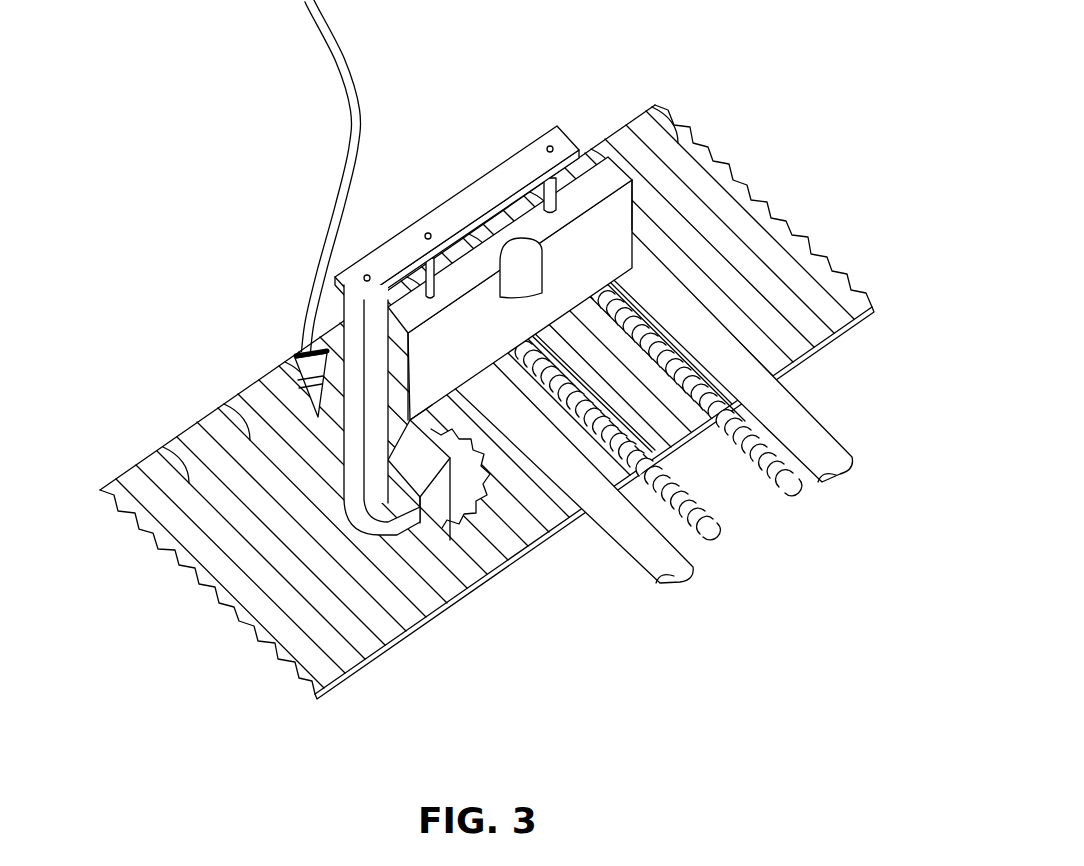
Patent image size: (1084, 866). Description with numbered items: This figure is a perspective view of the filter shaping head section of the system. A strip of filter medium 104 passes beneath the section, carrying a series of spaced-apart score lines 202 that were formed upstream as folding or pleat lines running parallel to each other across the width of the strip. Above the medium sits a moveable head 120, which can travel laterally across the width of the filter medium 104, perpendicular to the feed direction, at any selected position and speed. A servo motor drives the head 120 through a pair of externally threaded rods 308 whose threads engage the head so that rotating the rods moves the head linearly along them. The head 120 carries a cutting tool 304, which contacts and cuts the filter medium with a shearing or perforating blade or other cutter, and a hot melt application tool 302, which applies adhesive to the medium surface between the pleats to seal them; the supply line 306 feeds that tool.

The filter medium 104 is at (766, 226).
The moveable head 120 is at (610, 205).
The score lines 202 is at (241, 406).
The hot melt application tool 302 is at (302, 402).
The cutting tool 304 is at (462, 512).
The supply tube 306 is at (352, 90).
The externally threaded rods 308 is at (714, 540).